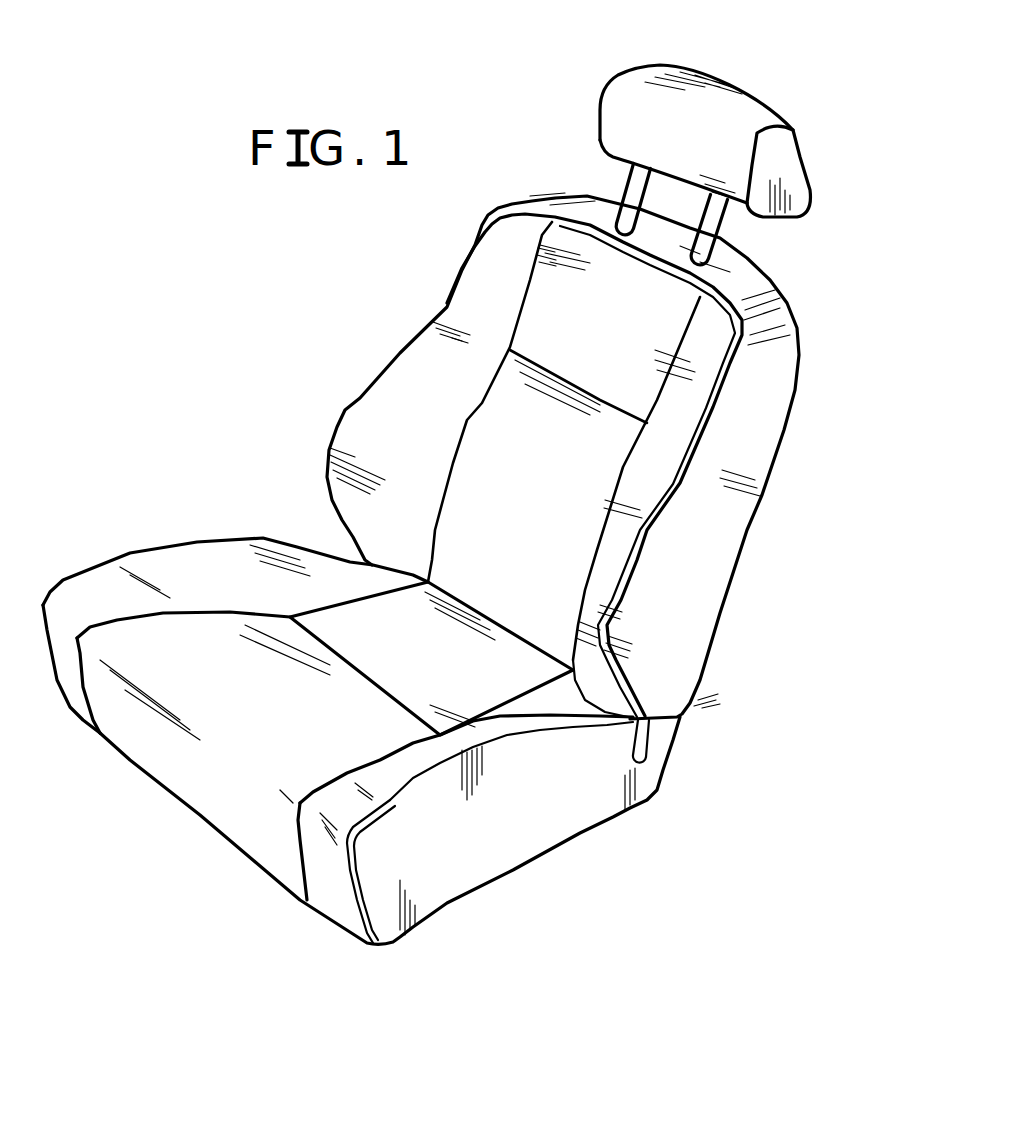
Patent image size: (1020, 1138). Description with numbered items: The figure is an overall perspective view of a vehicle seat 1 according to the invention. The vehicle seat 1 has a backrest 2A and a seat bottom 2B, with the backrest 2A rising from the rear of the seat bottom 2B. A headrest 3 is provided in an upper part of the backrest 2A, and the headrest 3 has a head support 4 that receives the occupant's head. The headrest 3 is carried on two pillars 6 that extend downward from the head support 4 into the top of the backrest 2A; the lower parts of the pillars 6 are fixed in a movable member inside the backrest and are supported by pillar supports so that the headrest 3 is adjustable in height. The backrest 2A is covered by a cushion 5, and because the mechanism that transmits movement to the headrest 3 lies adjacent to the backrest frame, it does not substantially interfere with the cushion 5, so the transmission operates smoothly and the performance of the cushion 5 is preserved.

The vehicle seat 1 is at (750, 532).
The backrest 2A is at (783, 423).
The seat bottom 2B is at (212, 630).
The headrest 3 is at (737, 90).
The head support 4 is at (797, 153).
The cushion 5 is at (493, 440).
The pillars 6 is at (623, 180).